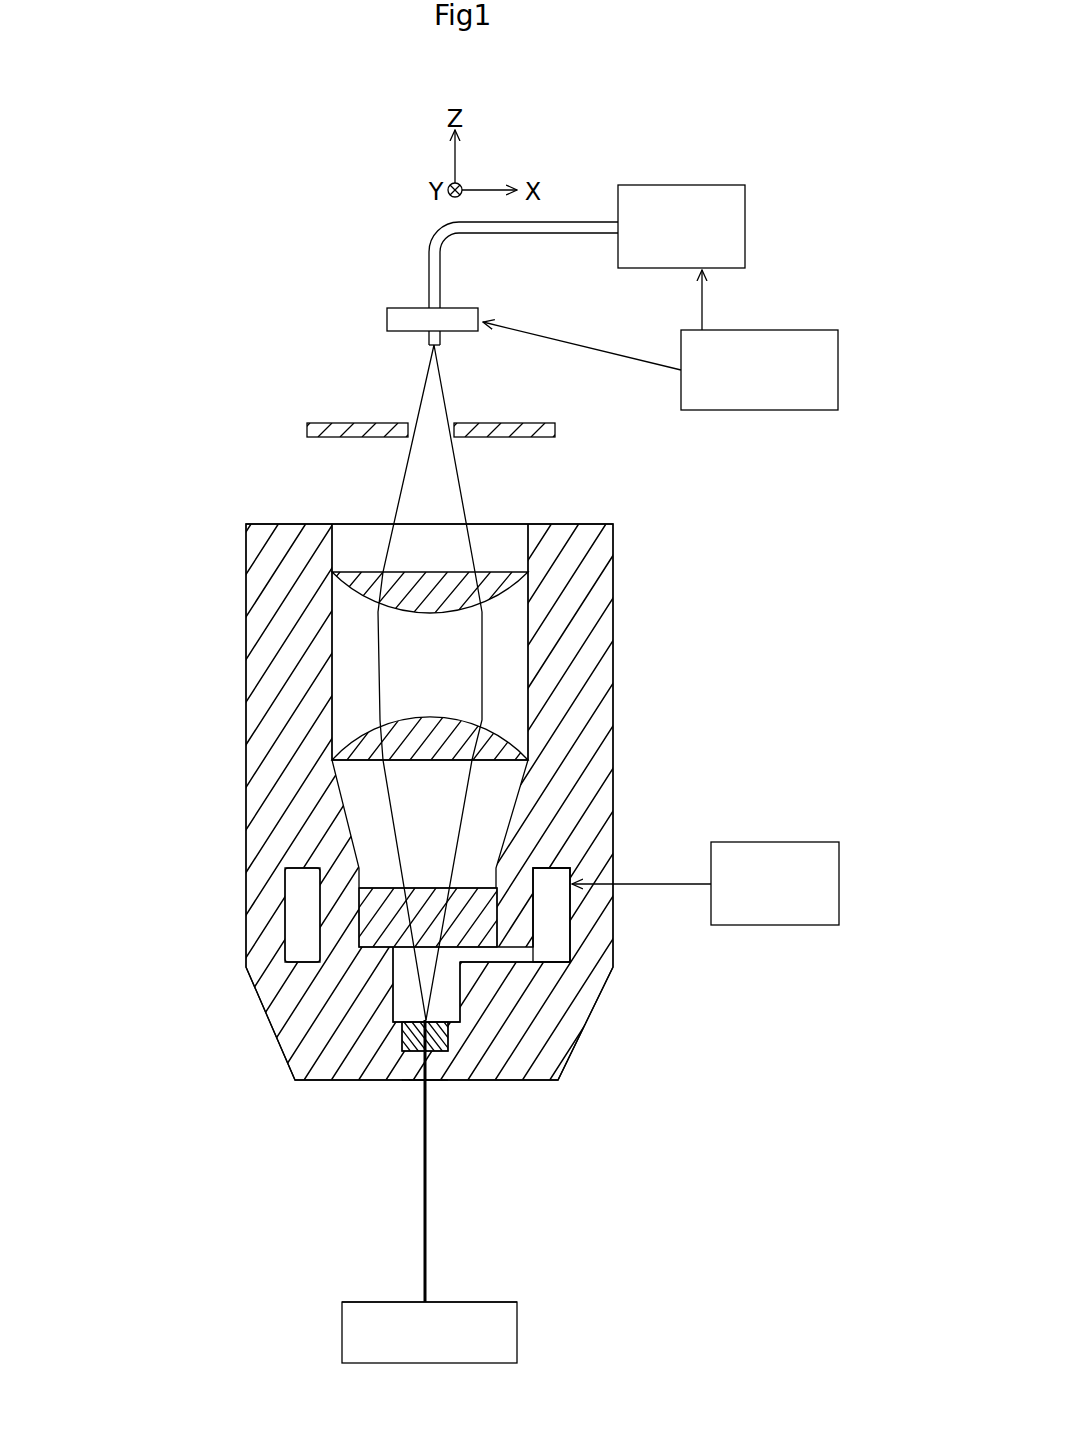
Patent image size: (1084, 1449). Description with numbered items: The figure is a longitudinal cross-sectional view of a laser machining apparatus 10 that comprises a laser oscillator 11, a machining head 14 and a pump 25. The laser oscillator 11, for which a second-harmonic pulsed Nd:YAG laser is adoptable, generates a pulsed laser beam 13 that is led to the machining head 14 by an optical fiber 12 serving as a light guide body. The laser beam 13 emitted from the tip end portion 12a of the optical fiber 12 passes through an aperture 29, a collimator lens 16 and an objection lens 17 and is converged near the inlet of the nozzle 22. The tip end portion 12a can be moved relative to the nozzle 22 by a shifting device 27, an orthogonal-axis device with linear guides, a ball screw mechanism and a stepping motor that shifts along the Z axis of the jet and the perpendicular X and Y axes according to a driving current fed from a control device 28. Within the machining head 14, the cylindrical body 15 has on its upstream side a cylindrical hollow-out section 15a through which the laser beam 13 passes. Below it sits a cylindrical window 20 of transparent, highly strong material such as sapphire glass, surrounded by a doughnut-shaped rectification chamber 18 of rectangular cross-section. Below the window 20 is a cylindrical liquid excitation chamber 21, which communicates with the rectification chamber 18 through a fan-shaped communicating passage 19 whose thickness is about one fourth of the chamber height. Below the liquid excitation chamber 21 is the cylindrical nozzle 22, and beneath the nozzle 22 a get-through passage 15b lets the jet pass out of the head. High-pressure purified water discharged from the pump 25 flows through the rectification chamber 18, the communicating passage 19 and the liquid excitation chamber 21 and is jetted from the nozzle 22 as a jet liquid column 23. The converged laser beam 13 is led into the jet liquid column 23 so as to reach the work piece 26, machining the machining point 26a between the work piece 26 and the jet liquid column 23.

The laser machining apparatus 10 is at (770, 153).
The laser oscillator 11 is at (682, 185).
The optical fiber 12 is at (429, 252).
The tip end portion 12a is at (427, 347).
The laser beam 13 is at (460, 483).
The machining head 14 is at (619, 541).
The cylindrical body 15 is at (613, 640).
The hollow-out section 15a is at (332, 628).
The get-through passage 15b is at (420, 1082).
The collimator lens 16 is at (355, 572).
The objection lens 17 is at (357, 738).
The rectification chamber 18 is at (287, 937).
The communicating passage 19 is at (510, 957).
The window 20 is at (362, 890).
The liquid excitation chamber 21 is at (393, 1002).
The nozzle 22 is at (438, 1050).
The jet liquid column 23 is at (427, 1233).
The pump 25 is at (772, 842).
The work piece 26 is at (517, 1323).
The machining point 26a is at (418, 1300).
The shifting device 27 is at (387, 320).
The control device 28 is at (800, 330).
The aperture 29 is at (307, 430).